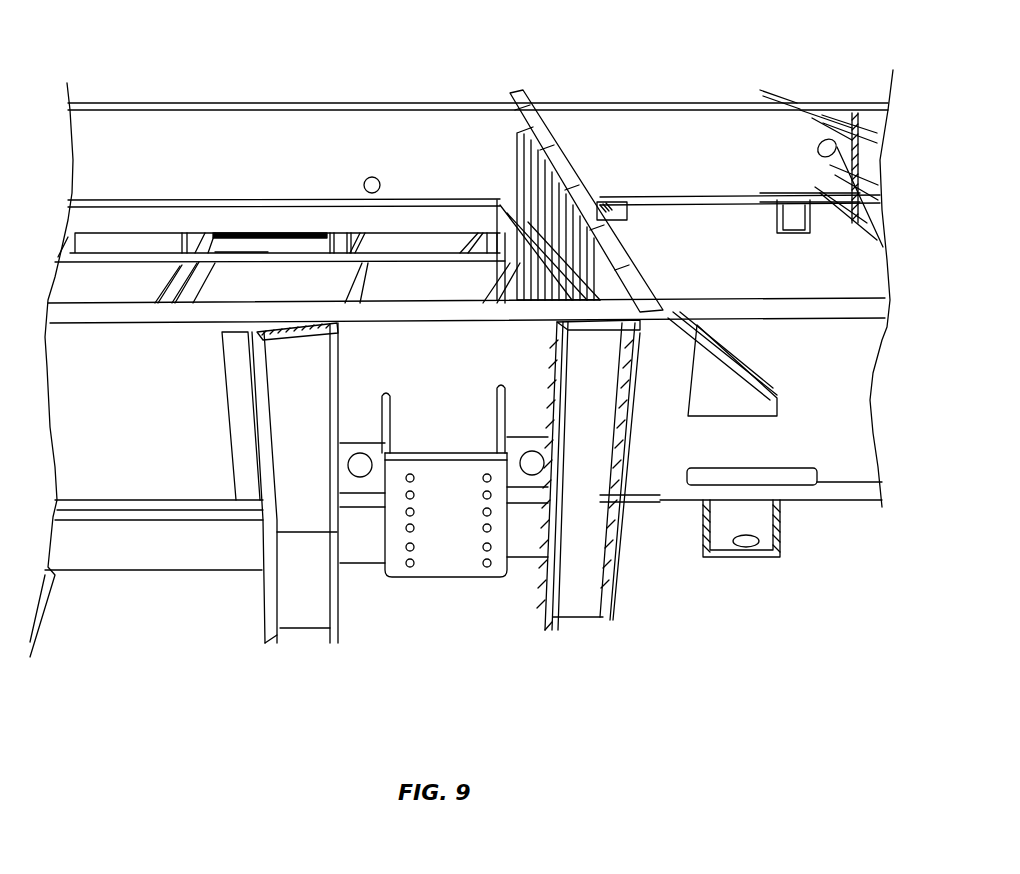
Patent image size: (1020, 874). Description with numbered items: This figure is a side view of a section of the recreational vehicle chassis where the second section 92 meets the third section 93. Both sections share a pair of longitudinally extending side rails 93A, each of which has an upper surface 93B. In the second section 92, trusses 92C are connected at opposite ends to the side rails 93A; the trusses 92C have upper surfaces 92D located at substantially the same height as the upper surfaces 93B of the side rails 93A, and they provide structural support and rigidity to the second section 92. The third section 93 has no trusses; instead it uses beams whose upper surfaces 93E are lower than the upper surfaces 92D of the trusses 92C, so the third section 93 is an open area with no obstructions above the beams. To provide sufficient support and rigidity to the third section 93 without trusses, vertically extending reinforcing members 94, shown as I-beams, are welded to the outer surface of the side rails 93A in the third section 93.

The second section 92 is at (805, 565).
The trusses 92C is at (600, 272).
The upper surfaces 92D is at (605, 243).
The third section 93 is at (150, 626).
The side rails 93A is at (748, 432).
The upper surface 93B is at (778, 312).
The upper surfaces 93E is at (177, 273).
The reinforcing members 94 is at (305, 620).